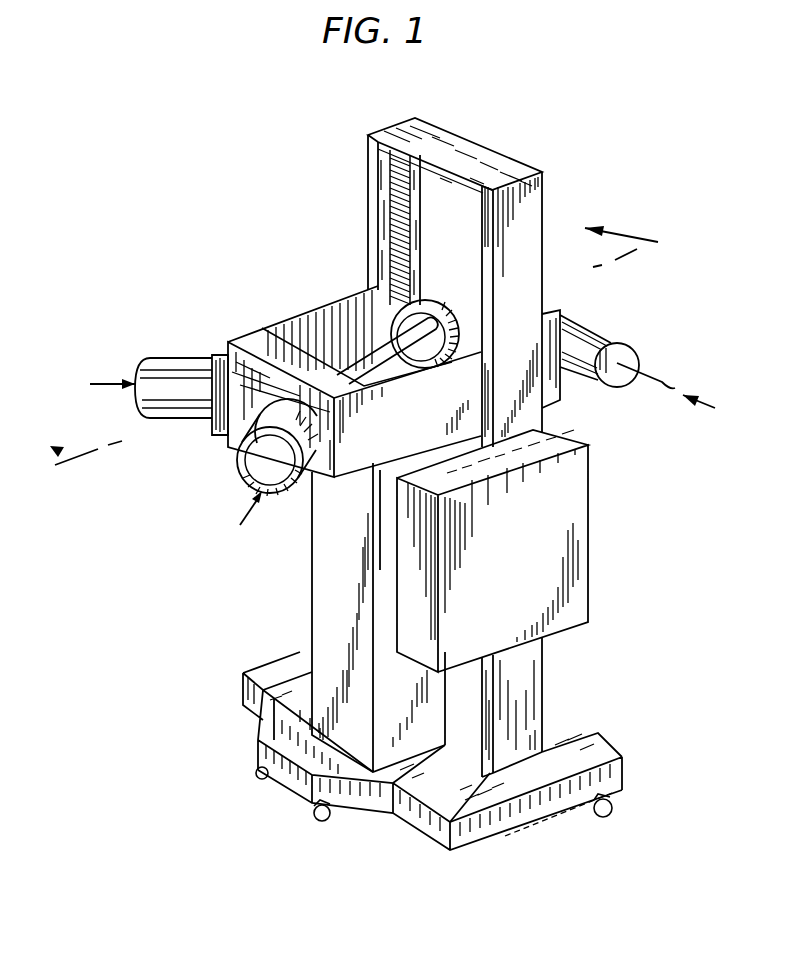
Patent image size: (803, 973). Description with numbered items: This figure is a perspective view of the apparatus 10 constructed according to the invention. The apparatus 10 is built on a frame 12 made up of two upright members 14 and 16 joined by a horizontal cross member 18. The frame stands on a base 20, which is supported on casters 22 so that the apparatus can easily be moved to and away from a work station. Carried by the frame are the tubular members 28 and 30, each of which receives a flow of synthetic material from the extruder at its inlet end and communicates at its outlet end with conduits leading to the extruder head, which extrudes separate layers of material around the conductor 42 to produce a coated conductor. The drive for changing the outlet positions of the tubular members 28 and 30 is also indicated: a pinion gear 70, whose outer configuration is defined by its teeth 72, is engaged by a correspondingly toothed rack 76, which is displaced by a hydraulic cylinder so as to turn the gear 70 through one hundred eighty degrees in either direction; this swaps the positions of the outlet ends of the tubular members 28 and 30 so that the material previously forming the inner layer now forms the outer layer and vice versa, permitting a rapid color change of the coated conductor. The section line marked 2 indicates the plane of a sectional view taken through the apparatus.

The apparatus 10 is at (500, 133).
The frame 12 is at (550, 205).
The upright member 14 is at (531, 292).
The upright member 16 is at (370, 172).
The horizontal cross member 18 is at (432, 113).
The base 20 is at (273, 654).
The casters 22 is at (327, 822).
The tubular member 28 is at (340, 363).
The tubular member 30 is at (447, 393).
The conductor 42 is at (652, 377).
The pinion gear 70 is at (445, 305).
The teeth 72 is at (405, 281).
The rack 76 is at (393, 225).
The section line 2- 2 is at (381, 335).